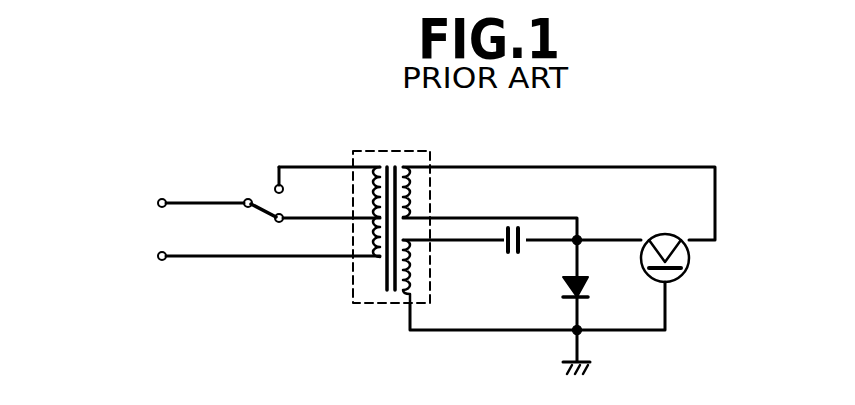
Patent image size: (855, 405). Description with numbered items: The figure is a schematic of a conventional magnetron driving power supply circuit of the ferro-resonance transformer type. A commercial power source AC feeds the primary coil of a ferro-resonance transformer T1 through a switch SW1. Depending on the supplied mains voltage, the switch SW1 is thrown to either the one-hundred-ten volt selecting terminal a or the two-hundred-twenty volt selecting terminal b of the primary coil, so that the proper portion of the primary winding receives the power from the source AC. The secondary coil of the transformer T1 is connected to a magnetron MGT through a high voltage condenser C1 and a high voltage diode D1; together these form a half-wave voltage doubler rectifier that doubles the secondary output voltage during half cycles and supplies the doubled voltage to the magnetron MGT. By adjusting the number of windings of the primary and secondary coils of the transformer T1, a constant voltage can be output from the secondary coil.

The commercial power source AC is at (138, 229).
The switch SW1 is at (271, 197).
The AC 110 V selecting terminal a is at (293, 234).
The AC 220 V selecting terminal b is at (293, 189).
The ferro-resonance transformer T1 is at (391, 209).
The high voltage condenser C1 is at (513, 254).
The high voltage diode D1 is at (588, 290).
The magnetron MGT is at (688, 260).